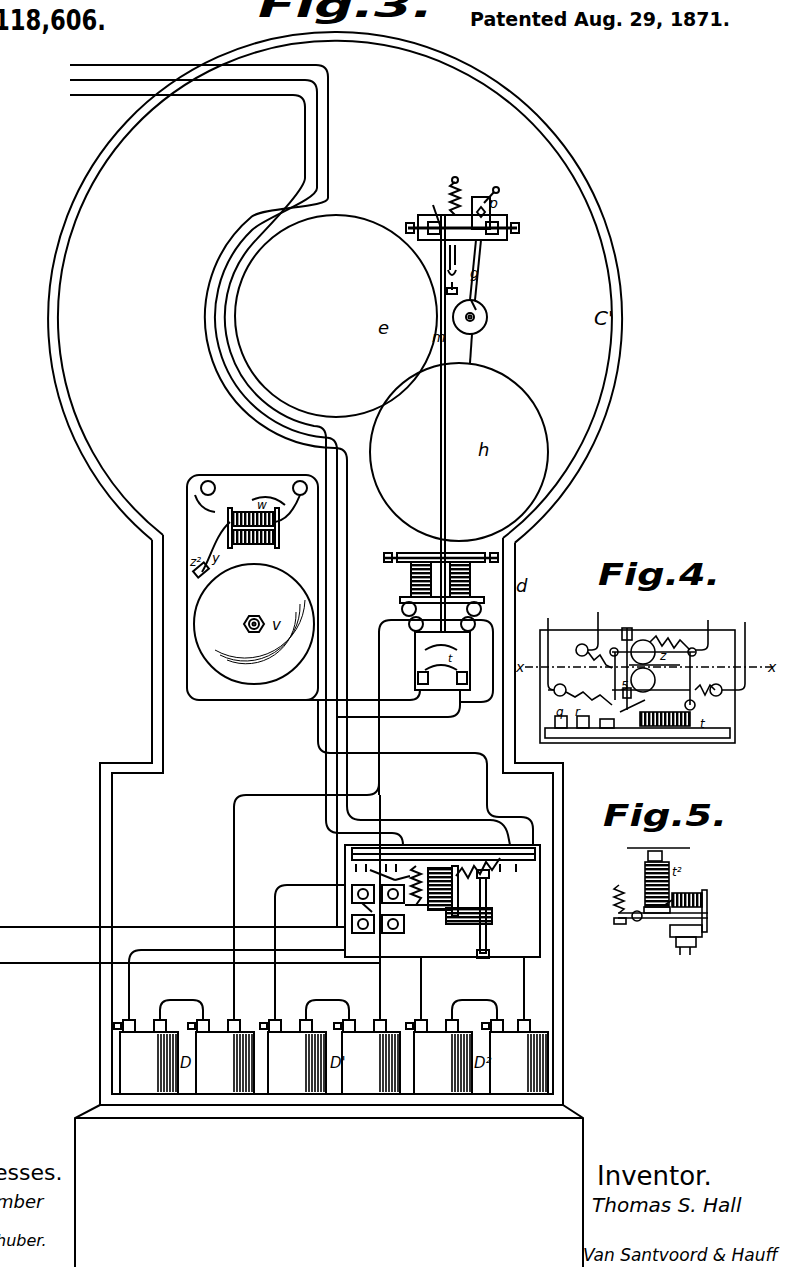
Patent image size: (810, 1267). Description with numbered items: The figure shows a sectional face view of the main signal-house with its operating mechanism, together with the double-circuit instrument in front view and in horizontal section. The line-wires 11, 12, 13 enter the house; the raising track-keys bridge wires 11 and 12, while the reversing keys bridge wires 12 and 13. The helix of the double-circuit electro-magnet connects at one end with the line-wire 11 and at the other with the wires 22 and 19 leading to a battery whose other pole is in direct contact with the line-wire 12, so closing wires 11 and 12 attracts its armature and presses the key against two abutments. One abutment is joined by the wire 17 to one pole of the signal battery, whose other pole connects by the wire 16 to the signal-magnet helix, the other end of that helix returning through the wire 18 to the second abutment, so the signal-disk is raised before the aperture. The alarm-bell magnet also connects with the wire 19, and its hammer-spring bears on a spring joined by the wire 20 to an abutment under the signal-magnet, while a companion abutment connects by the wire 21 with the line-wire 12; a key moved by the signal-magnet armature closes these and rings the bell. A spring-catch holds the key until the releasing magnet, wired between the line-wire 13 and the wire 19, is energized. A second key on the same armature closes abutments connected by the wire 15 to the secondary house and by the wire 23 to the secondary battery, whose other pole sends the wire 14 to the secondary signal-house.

In FIG. 3, the line-wire 11 is at (227, 462).
In FIG. 4, the line-wire 11 is at (600, 626).
In FIG. 3, the line-wire 12 is at (245, 542).
In FIG. 3, the line-wire 13 is at (279, 446).
In FIG. 4, the line-wire 13 is at (711, 630).
In FIG. 3, the wire 14 is at (199, 907).
In FIG. 3, the wire 15 is at (172, 917).
In FIG. 3, the wire 16 is at (366, 851).
In FIG. 3, the wire 17 is at (237, 976).
In FIG. 3, the wire 18 is at (432, 703).
In FIG. 3, the wire 19 is at (429, 756).
In FIG. 4, the wire 19 is at (744, 656).
In FIG. 3, the wire 20 is at (298, 605).
In FIG. 3, the wire 21 is at (398, 703).
In FIG. 3, the wire 22 is at (442, 893).
In FIG. 4, the wire 22 is at (558, 654).
In FIG. 3, the wire 23 is at (302, 947).